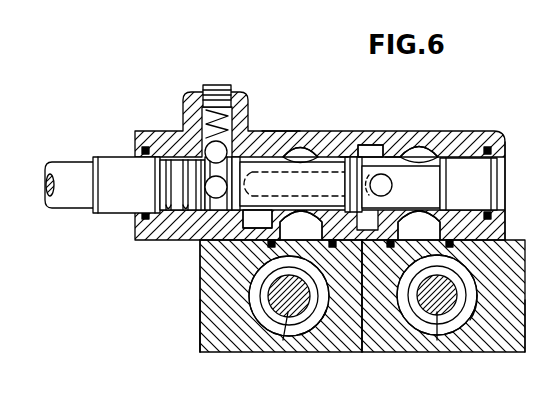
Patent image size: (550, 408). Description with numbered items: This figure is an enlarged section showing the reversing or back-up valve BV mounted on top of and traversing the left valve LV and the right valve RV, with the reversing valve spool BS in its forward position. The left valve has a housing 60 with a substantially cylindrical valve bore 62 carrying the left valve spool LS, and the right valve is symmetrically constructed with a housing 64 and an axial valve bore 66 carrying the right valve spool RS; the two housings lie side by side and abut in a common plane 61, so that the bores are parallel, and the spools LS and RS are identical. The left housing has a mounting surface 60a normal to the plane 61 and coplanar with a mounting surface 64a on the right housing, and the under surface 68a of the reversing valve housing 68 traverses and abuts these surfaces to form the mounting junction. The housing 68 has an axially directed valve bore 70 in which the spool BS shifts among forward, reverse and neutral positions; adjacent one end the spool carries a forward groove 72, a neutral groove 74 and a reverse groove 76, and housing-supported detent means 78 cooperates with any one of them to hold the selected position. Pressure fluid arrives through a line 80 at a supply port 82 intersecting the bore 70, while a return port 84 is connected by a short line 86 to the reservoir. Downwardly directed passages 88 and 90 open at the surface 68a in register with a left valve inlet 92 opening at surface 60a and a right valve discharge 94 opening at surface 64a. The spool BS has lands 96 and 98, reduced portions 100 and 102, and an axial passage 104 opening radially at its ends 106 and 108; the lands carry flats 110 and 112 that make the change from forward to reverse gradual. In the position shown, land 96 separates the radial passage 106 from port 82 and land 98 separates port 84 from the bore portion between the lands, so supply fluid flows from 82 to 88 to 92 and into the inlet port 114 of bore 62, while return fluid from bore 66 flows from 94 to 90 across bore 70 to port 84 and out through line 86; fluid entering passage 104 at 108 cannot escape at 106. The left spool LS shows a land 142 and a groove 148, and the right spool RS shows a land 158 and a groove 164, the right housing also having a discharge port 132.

The left valve housing 60 is at (242, 349).
The mounting surface 60a is at (183, 296).
The common plane 61 is at (352, 352).
The left valve bore 62 is at (256, 307).
The right valve housing 64 is at (481, 350).
The mounting surface 64a is at (506, 233).
The right valve bore 66 is at (472, 302).
The reversing valve housing 68 is at (483, 138).
The under surface 68a is at (385, 255).
The reversing valve bore 70 is at (470, 158).
The forward groove 72 is at (192, 213).
The neutral groove 74 is at (188, 217).
The reverse groove 76 is at (170, 218).
The detent means 78 is at (206, 148).
The line 80 is at (222, 253).
The supply port 82 is at (283, 140).
The return port 84 is at (373, 152).
The reservoir line 86 is at (390, 140).
The passage 88 is at (323, 224).
The passage 90 is at (433, 226).
The left valve inlet 92 is at (323, 260).
The right valve discharge 94 is at (432, 250).
The land 96 is at (233, 131).
The land 98 is at (355, 158).
The reduced portion 100 is at (325, 157).
The reduced portion 102 is at (413, 143).
The axial passage 104 is at (307, 198).
The radial passage 106 is at (245, 212).
The radial opening 108 is at (393, 185).
The flat 110 is at (238, 150).
The flat 112 is at (344, 160).
The inlet port 114 is at (262, 323).
The discharge port 132 is at (413, 325).
The land 142 is at (260, 285).
The groove 148 is at (317, 318).
The land 158 is at (465, 283).
The groove 164 is at (453, 310).
The reversing valve spool BS is at (82, 198).
The reversing valve BV is at (140, 140).
The left valve LV is at (204, 340).
The right valve RV is at (505, 348).
The left valve spool LS is at (283, 340).
The right valve spool RS is at (437, 340).